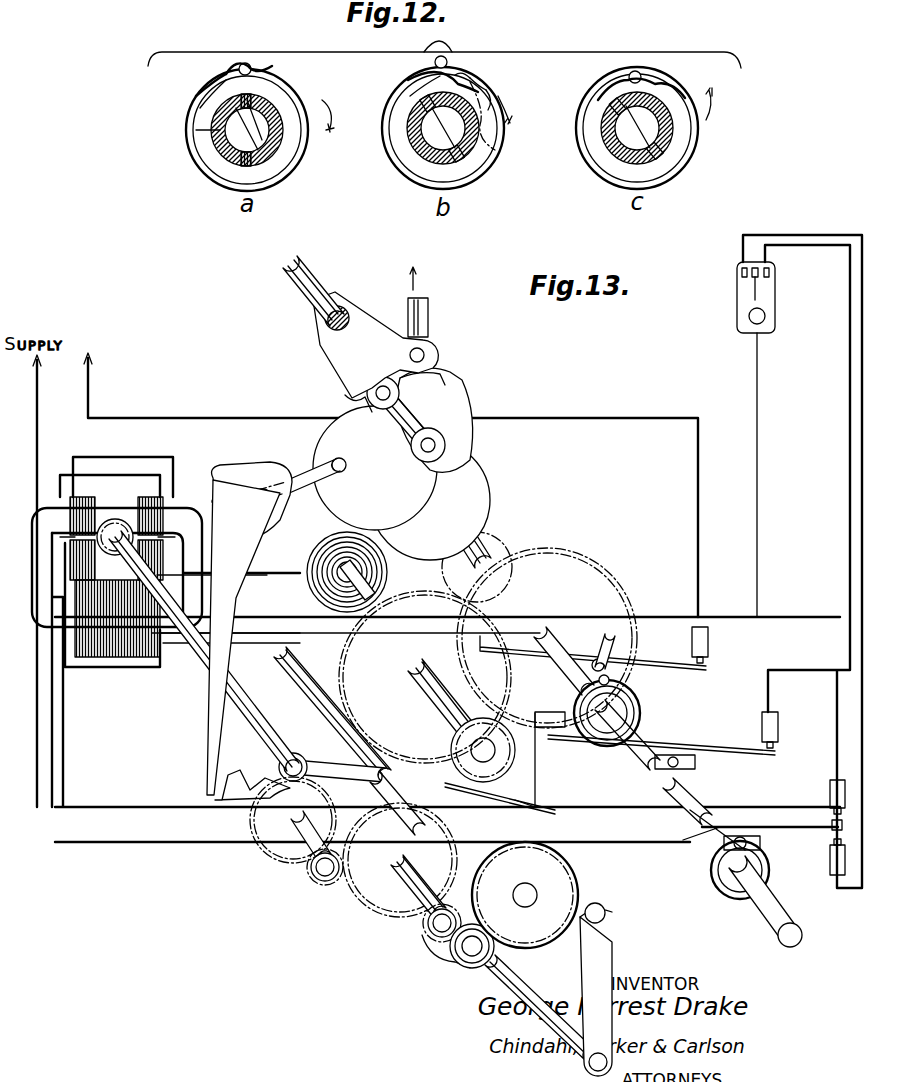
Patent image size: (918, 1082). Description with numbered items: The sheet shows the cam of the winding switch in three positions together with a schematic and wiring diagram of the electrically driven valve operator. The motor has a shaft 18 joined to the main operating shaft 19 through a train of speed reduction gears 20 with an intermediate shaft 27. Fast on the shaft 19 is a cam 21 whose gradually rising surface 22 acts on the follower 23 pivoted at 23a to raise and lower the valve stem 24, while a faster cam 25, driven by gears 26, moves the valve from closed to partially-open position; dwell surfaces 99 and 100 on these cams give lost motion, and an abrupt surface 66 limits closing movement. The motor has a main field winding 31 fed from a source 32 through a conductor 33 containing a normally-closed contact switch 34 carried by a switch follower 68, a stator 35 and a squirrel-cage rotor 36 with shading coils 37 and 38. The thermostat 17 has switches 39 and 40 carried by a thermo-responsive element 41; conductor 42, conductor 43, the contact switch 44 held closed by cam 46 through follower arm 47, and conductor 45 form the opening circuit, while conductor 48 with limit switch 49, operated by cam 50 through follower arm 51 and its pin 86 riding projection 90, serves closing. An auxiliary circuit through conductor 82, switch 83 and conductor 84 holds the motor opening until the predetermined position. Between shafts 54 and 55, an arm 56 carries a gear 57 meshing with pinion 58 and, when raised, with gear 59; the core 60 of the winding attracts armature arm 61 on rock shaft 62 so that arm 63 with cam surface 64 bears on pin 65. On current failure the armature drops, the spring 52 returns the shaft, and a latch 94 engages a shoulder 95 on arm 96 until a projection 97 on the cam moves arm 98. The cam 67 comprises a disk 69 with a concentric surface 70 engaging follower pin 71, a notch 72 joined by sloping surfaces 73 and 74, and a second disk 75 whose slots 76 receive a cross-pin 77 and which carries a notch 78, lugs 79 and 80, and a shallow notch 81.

In FIG. 13, the thermostat 17 is at (727, 272).
In FIG. 13, the motor shaft 18 is at (245, 705).
In FIG. 12, the main operating shaft 19 is at (230, 140).
In FIG. 13, the main operating shaft 19 is at (768, 930).
In FIG. 13, the speed reduction gears 20 is at (336, 888).
In FIG. 13, the cam 21 is at (445, 400).
In FIG. 13, the rising cam surface 22 is at (320, 440).
In FIG. 13, the follower 23 is at (340, 345).
In FIG. 13, the follower pivot 23a is at (300, 290).
In FIG. 13, the valve stem 24 is at (430, 310).
In FIG. 13, the cam 25 is at (495, 508).
In FIG. 13, the gears 26 is at (497, 560).
In FIG. 13, the intermediate shaft 27 is at (445, 700).
In FIG. 13, the main field winding 31 is at (112, 640).
In FIG. 13, the source of alternating current 32 is at (66, 364).
In FIG. 13, the conductor 33 is at (200, 418).
In FIG. 13, the contact switch 34 is at (719, 662).
In FIG. 13, the stator 35 is at (45, 605).
In FIG. 13, the squirrel-cage rotor 36 is at (160, 520).
In FIG. 13, the shading coils 37 is at (82, 497).
In FIG. 13, the shading coils 38 is at (100, 522).
In FIG. 13, the thermostat switch 39 is at (768, 280).
In FIG. 13, the thermostat switch 40 is at (748, 278).
In FIG. 13, the thermo-responsive element 41 is at (744, 320).
In FIG. 13, the conductor 42 is at (727, 617).
In FIG. 13, the conductor 43 is at (850, 388).
In FIG. 13, the contact switch 44 is at (784, 752).
In FIG. 13, the conductor 45 is at (535, 805).
In FIG. 13, the cam 46 is at (700, 790).
In FIG. 13, the follower arm 47 is at (702, 748).
In FIG. 13, the conductor 48 is at (798, 235).
In FIG. 13, the limit switch 49 is at (822, 844).
In FIG. 13, the cam 50 is at (718, 886).
In FIG. 13, the follower arm 51 is at (783, 840).
In FIG. 13, the spring 52 is at (310, 556).
In FIG. 13, the shaft 54 is at (485, 812).
In FIG. 13, the shaft 55 is at (390, 915).
In FIG. 13, the arm 56 is at (430, 950).
In FIG. 13, the gear 57 is at (472, 962).
In FIG. 13, the pinion 58 is at (430, 928).
In FIG. 13, the gear 59 is at (560, 870).
In FIG. 13, the core 60 is at (65, 655).
In FIG. 13, the armature arm 61 is at (170, 665).
In FIG. 13, the rock shaft 62 is at (345, 735).
In FIG. 13, the arm 63 is at (612, 960).
In FIG. 13, the cam surface 64 is at (608, 925).
In FIG. 13, the pin 65 is at (602, 905).
In FIG. 13, the abrupt cam surface 66 is at (445, 378).
In FIG. 12, the cam 67 is at (186, 130).
In FIG. 13, the cam 67 is at (651, 709).
In FIG. 13, the arm 68 is at (648, 665).
In FIG. 12, the disk 69 is at (292, 95).
In FIG. 13, the disk 69 is at (642, 718).
In FIG. 12, the concentric surface 70 is at (360, 163).
In FIG. 12, the follower pin 71 is at (245, 64).
In FIG. 13, the follower pin 71 is at (596, 660).
In FIG. 12, the notch 72 is at (226, 76).
In FIG. 12, the sloping surface 73 is at (500, 98).
In FIG. 12, the sloping surface 74 is at (196, 96).
In FIG. 12, the second disk 75 is at (203, 142).
In FIG. 13, the second disk 75 is at (630, 700).
In FIG. 12, the slots 76 is at (243, 160).
In FIG. 12, the cross-pin 77 is at (418, 150).
In FIG. 13, the cross-pin 77 is at (608, 676).
In FIG. 12, the notch 78 is at (200, 108).
In FIG. 13, the notch 78 is at (585, 690).
In FIG. 12, the lug 79 is at (462, 70).
In FIG. 12, the lug 80 is at (490, 92).
In FIG. 12, the notch 81 is at (478, 82).
In FIG. 13, the notch 81 is at (590, 684).
In FIG. 13, the conductor 82 is at (837, 636).
In FIG. 13, the switch 83 is at (824, 806).
In FIG. 13, the conductor 84 is at (566, 805).
In FIG. 13, the pin 86 is at (742, 836).
In FIG. 13, the projection 90 is at (735, 838).
In FIG. 13, the latch 94 is at (210, 718).
In FIG. 13, the shoulder 95 is at (213, 782).
In FIG. 13, the arm 96 is at (250, 800).
In FIG. 13, the projection 97 is at (332, 464).
In FIG. 13, the arm 98 is at (320, 495).
In FIG. 13, the dwell surface 99 is at (470, 468).
In FIG. 13, the dwell surface 100 is at (346, 412).